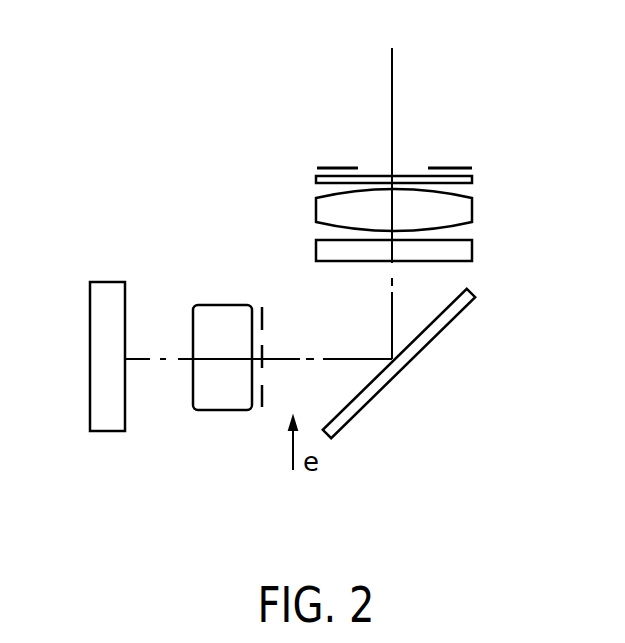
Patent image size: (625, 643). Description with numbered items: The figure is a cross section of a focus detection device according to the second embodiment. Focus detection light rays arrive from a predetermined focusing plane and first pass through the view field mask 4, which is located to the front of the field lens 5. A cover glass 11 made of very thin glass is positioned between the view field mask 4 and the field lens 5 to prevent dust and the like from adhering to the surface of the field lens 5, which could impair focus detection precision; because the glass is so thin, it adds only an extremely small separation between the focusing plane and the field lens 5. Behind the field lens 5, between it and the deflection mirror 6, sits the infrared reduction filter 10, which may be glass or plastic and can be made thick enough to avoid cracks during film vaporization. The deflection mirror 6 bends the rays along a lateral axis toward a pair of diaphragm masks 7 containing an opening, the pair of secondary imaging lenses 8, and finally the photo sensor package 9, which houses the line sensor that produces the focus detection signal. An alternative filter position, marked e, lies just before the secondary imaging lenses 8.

The view field mask 4 is at (331, 167).
The cover glass 11 is at (468, 181).
The field lens 5 is at (325, 205).
The infrared reduction filter 10 is at (462, 251).
The deflection mirror 6 is at (448, 317).
The photo sensor package 9 is at (110, 420).
The secondary imaging lenses 8 is at (218, 395).
The diaphragm masks 7 is at (262, 396).